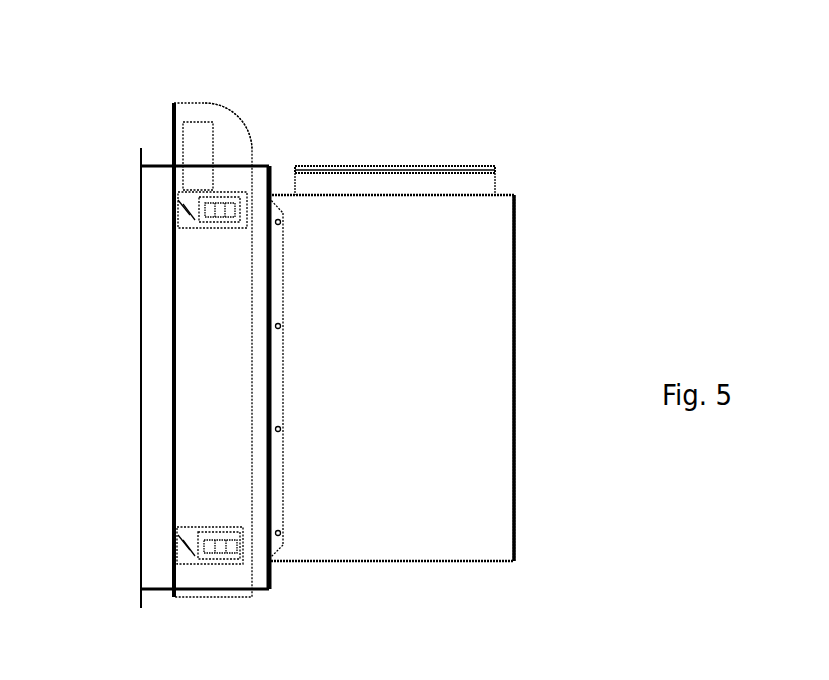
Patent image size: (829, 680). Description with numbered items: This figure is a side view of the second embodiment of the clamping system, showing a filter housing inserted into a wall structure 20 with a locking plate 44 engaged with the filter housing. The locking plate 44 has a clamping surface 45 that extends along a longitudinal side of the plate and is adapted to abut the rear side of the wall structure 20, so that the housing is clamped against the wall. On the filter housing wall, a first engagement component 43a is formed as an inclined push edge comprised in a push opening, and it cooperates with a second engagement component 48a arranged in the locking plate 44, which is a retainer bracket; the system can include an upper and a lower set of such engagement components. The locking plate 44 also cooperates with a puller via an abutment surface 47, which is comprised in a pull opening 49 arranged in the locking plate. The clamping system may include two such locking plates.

The wall structure 20 is at (163, 188).
The clamping surface 45 is at (177, 365).
The locking plate 44 is at (228, 486).
The pull opening 49 is at (201, 150).
The abutment surface 47 is at (197, 122).
The first engagement component 43a is at (190, 218).
The second engagement component 48a is at (183, 202).